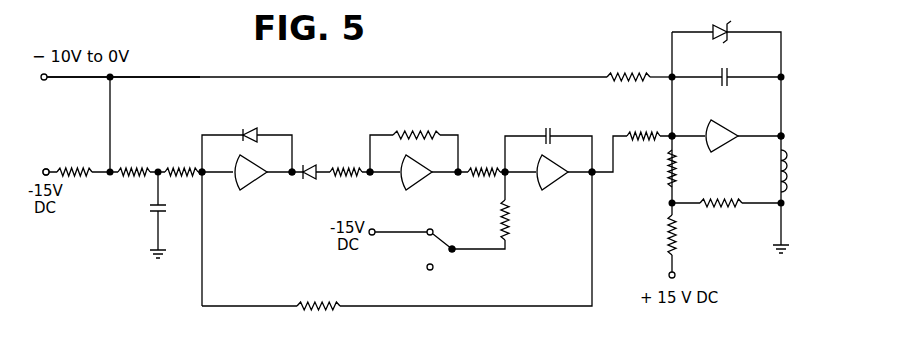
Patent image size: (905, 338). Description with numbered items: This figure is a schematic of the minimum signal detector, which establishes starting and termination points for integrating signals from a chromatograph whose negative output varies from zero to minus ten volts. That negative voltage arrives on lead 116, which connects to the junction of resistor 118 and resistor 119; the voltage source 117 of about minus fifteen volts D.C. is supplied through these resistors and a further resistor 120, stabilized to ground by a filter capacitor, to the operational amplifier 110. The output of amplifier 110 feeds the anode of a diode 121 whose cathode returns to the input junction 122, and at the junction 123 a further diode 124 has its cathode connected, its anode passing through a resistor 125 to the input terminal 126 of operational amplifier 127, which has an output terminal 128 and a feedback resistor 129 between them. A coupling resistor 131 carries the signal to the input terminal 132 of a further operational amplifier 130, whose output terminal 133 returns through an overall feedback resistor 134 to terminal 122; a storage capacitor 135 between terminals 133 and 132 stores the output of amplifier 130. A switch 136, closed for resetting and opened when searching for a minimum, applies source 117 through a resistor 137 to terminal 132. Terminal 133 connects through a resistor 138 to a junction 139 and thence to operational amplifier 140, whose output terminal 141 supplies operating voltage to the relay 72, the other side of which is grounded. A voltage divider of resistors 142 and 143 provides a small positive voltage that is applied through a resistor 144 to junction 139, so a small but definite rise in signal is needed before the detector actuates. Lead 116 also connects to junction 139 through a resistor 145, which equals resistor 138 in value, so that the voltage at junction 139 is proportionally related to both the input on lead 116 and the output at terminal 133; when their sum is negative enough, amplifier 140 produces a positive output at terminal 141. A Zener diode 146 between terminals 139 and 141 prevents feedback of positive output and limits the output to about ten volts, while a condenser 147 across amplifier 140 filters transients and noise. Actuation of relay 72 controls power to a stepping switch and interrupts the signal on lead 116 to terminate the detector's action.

The lead 116 is at (64, 79).
The voltage source 117 is at (50, 170).
The resistor 118 is at (68, 180).
The resistor 119 is at (138, 182).
The resistor 120 is at (177, 168).
The diode 121 is at (248, 130).
The junction 122 is at (203, 178).
The operational amplifier 110 is at (243, 188).
The junction 123 is at (291, 176).
The diode 124 is at (318, 168).
The resistor 125 is at (342, 180).
The input terminal 126 is at (372, 178).
The operational amplifier 127 is at (411, 187).
The output terminal 128 is at (460, 168).
The feedback resistor 129 is at (418, 130).
The operational amplifier 130 is at (565, 186).
The coupling resistor 131 is at (485, 180).
The input terminal 132 is at (507, 171).
The output terminal 133 is at (594, 178).
The overall feedback resistor 134 is at (323, 310).
The storage capacitor 135 is at (549, 128).
The switch 136 is at (452, 252).
The resistor 137 is at (508, 228).
The resistor 138 is at (637, 131).
The junction 139 is at (670, 141).
The operational amplifier 140 is at (746, 118).
The output terminal 141 is at (784, 136).
The resistor 142 is at (677, 238).
The resistor 143 is at (728, 208).
The resistor 144 is at (677, 168).
The resistor 145 is at (615, 73).
The Zener diode 146 is at (713, 30).
The condenser 147 is at (720, 72).
The relay 72 is at (790, 176).